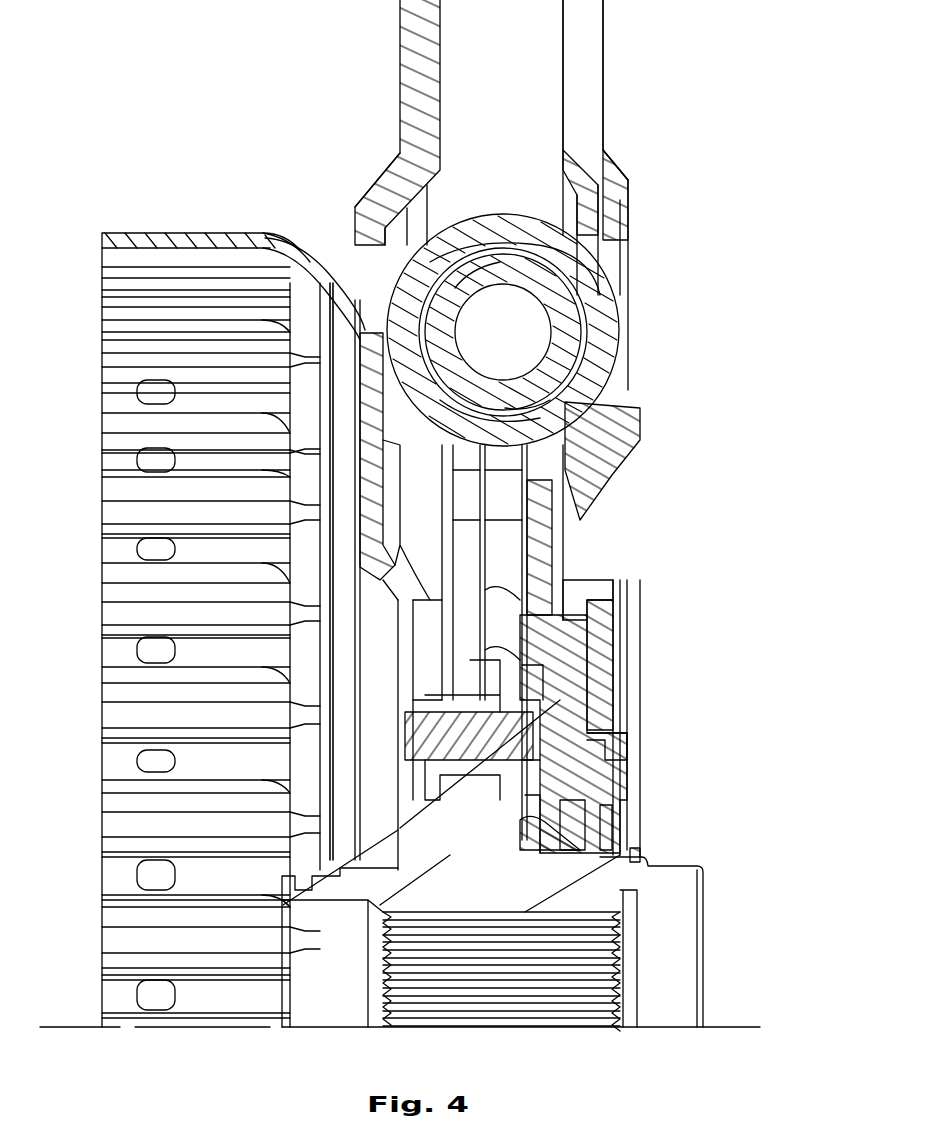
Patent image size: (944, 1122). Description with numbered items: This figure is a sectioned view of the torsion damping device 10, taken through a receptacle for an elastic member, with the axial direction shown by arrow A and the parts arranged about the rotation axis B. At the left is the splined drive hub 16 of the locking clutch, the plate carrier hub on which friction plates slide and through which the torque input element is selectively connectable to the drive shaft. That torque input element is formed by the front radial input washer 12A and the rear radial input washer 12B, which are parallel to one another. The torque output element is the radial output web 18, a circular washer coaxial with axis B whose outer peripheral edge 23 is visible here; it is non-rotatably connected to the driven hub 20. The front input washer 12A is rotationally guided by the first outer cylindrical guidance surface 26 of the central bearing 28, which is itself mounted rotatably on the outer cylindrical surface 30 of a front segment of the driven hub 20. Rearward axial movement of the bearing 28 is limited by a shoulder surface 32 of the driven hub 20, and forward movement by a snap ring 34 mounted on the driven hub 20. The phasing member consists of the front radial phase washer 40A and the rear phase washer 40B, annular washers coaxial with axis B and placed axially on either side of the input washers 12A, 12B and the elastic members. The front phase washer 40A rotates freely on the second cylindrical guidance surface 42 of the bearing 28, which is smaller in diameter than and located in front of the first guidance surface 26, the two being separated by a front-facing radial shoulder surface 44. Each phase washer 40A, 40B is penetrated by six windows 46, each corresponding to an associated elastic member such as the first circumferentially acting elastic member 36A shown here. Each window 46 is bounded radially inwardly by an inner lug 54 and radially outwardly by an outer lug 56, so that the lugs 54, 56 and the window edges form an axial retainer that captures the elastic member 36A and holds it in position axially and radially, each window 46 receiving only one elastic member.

The torsion damping device 10 is at (740, 157).
The splined drive hub 16 is at (200, 285).
The front radial phase washer 40A is at (595, 108).
The rear phase washer 40B is at (415, 118).
The outer lug 56 is at (377, 195).
The window 46 is at (588, 237).
The first circumferentially acting elastic member 36A is at (603, 342).
The inner lug 54 is at (628, 410).
The rear radial input washer 12B is at (575, 473).
The front radial input washer 12A is at (545, 512).
The outer peripheral edge 23 is at (567, 534).
The first outer cylindrical guidance surface 26 is at (598, 597).
The front-facing radial shoulder surface 44 is at (600, 628).
The radial output web 18 is at (505, 692).
The second cylindrical guidance surface 42 is at (605, 710).
The central bearing 28 is at (597, 773).
The shoulder surface 32 is at (533, 823).
The outer cylindrical surface 30 is at (632, 842).
The snap ring 34 is at (642, 860).
The driven hub 20 is at (613, 883).
The axial direction arrow A is at (738, 678).
The axis B is at (655, 1027).